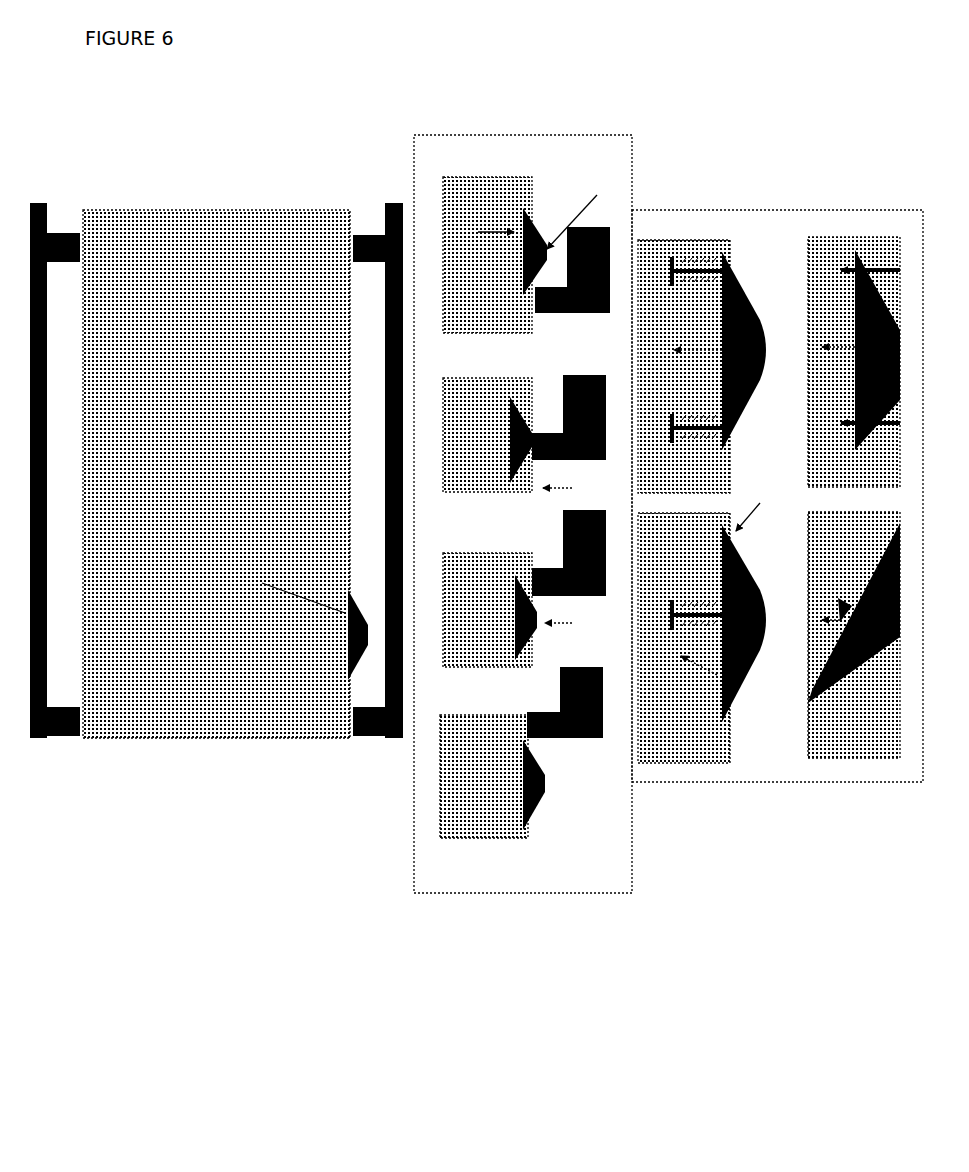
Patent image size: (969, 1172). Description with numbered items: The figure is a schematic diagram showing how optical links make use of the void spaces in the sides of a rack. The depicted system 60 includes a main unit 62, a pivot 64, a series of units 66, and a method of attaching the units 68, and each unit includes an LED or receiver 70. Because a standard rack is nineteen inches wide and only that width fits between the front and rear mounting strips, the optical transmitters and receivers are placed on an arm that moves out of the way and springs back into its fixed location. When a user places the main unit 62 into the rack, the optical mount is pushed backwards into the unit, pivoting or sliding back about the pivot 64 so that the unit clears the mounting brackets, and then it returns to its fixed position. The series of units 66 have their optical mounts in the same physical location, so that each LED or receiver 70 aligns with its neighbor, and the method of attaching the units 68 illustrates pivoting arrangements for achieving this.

The system 60 is at (575, 527).
The main unit 62 is at (170, 740).
The pivot 64 is at (345, 658).
The series of units 66 is at (502, 893).
The method of attaching the units 68 is at (868, 782).
The LED or receiver 70 is at (777, 537).